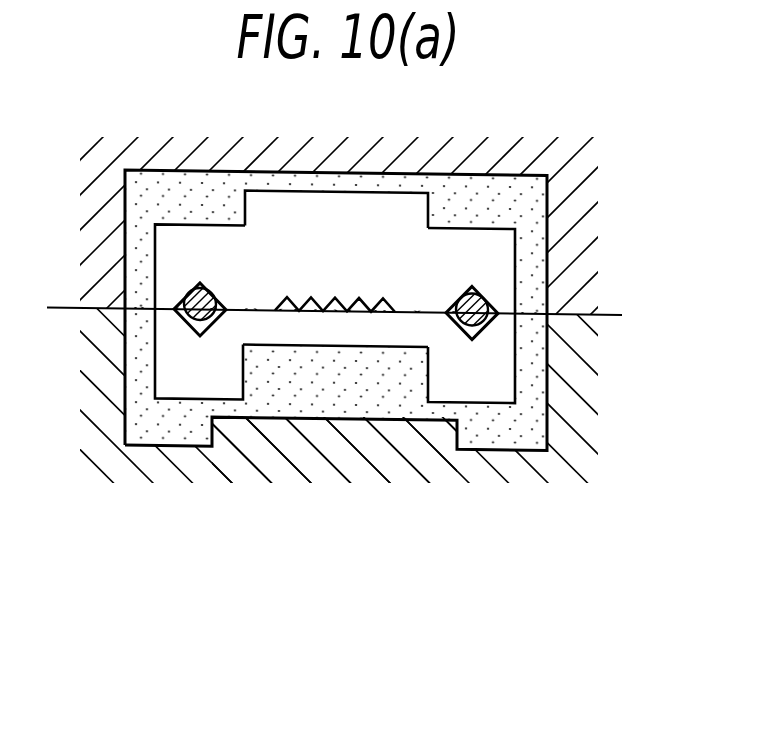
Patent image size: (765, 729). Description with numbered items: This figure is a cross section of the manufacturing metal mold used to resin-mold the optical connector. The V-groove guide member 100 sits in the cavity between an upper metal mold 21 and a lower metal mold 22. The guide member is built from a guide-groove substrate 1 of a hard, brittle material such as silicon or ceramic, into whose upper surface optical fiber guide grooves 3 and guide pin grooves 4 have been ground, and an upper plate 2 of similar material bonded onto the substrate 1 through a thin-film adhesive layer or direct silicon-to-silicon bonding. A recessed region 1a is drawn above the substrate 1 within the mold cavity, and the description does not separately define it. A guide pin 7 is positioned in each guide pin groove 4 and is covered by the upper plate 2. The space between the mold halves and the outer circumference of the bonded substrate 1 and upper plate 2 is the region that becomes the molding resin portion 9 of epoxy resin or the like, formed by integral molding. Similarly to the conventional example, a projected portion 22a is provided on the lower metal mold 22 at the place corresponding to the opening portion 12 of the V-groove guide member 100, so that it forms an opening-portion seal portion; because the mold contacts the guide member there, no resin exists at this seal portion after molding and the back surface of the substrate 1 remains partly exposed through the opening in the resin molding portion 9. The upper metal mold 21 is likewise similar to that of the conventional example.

The V-groove guide member 100 is at (352, 314).
The guide-groove substrate 1 is at (463, 242).
The recess of upper housing member 1a is at (273, 200).
The upper plate 2 is at (188, 390).
The optical fiber guide grooves 3 is at (338, 298).
The guide pin grooves 4 is at (465, 343).
The guide pin 7 is at (480, 313).
The molding resin portion 9 is at (130, 378).
The opening portion 12 is at (357, 403).
The upper metal mold 21 is at (150, 146).
The lower metal mold 22 is at (262, 462).
The projected portion 22a is at (312, 441).